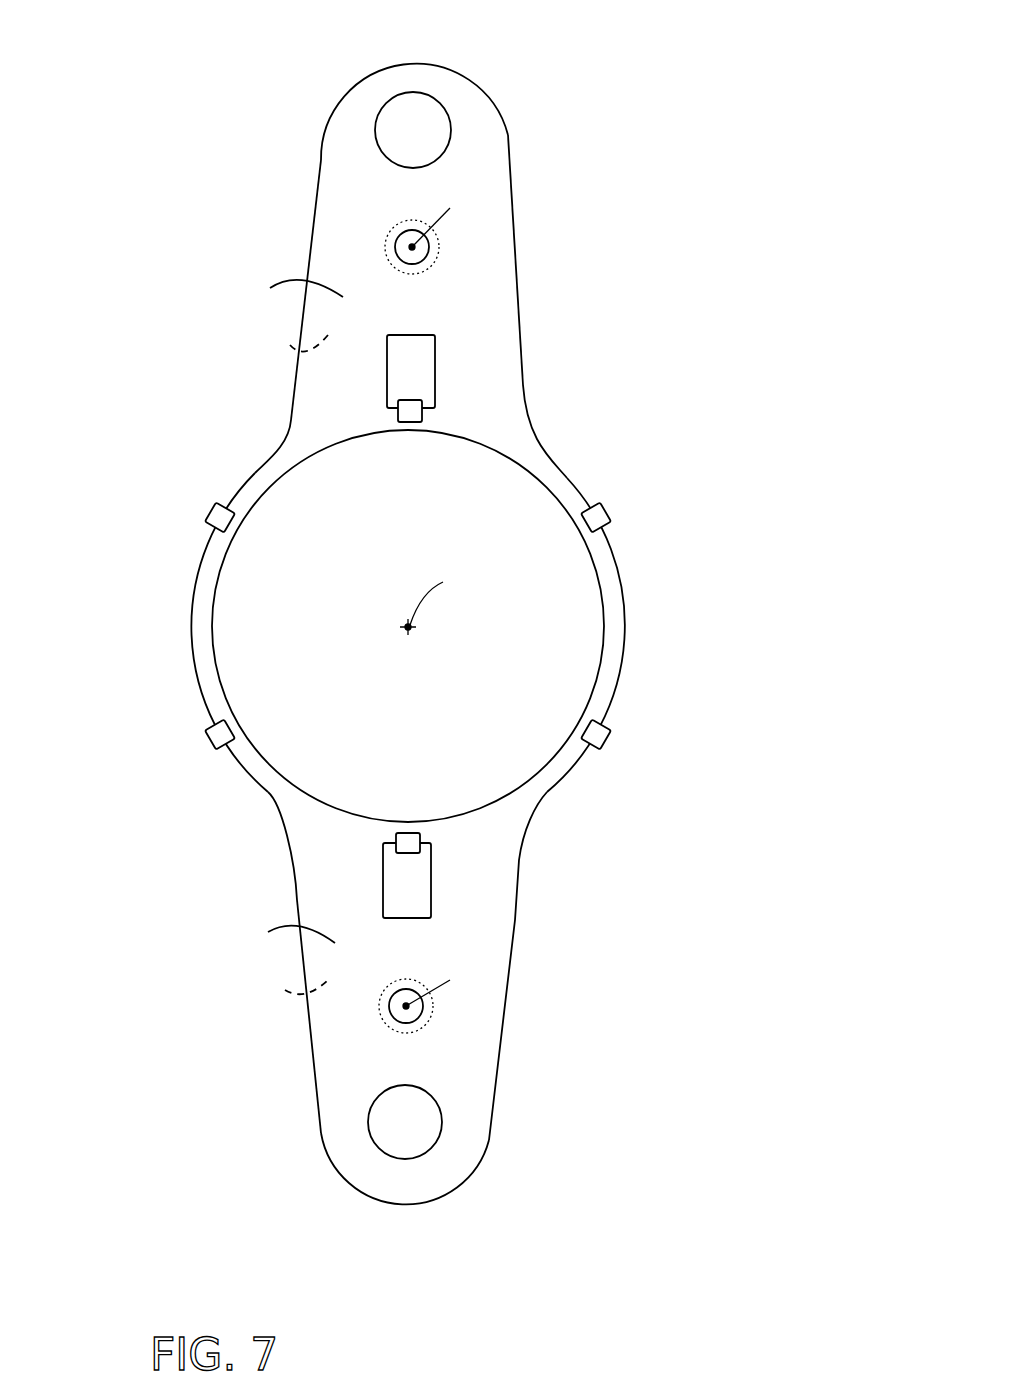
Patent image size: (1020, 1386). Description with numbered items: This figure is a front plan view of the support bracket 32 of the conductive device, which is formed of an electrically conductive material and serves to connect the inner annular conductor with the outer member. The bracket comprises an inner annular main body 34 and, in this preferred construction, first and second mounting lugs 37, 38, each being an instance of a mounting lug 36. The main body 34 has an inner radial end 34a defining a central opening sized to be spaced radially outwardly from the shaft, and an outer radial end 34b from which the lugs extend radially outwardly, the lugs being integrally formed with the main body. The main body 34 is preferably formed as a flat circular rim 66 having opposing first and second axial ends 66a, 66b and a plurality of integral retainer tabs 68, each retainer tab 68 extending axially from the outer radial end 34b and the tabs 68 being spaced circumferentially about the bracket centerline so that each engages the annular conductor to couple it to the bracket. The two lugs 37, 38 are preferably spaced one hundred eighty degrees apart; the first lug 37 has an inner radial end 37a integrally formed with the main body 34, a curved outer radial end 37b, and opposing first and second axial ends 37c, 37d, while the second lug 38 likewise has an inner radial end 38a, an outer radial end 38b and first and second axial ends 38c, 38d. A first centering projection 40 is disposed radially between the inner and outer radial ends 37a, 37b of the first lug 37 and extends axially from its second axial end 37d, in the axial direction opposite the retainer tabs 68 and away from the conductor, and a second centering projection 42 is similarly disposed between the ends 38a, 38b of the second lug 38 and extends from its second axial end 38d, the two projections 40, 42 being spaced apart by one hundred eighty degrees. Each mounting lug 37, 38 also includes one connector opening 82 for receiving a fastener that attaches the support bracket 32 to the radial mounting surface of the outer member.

The support bracket 32 is at (439, 631).
The annular main body 34 is at (418, 626).
The inner radial end 34a is at (404, 626).
The outer radial end 34b is at (418, 611).
The mounting lug 36 is at (412, 631).
The first mounting lug 37 is at (410, 239).
The inner radial end 37a is at (505, 432).
The outer radial end 37b is at (427, 43).
The first axial end 37c is at (280, 293).
The second axial end 37d is at (290, 345).
The second mounting lug 38 is at (409, 1027).
The inner radial end 38a is at (482, 842).
The outer radial end 38b is at (425, 1208).
The first axial end 38c is at (275, 936).
The second axial end 38d is at (278, 984).
The first centering projection 40 is at (390, 245).
The second centering projection 42 is at (388, 1005).
The flat circular rim 66 is at (418, 626).
The first axial end 66a is at (205, 605).
The second axial end 66b is at (205, 607).
The retainer tab 68 is at (217, 512).
The connector opening 82 is at (432, 127).